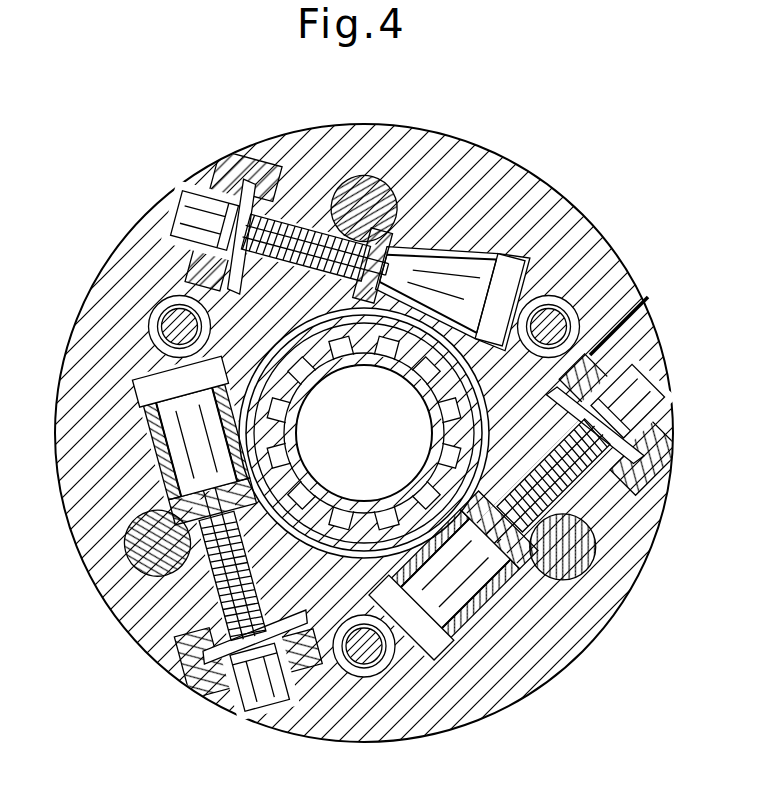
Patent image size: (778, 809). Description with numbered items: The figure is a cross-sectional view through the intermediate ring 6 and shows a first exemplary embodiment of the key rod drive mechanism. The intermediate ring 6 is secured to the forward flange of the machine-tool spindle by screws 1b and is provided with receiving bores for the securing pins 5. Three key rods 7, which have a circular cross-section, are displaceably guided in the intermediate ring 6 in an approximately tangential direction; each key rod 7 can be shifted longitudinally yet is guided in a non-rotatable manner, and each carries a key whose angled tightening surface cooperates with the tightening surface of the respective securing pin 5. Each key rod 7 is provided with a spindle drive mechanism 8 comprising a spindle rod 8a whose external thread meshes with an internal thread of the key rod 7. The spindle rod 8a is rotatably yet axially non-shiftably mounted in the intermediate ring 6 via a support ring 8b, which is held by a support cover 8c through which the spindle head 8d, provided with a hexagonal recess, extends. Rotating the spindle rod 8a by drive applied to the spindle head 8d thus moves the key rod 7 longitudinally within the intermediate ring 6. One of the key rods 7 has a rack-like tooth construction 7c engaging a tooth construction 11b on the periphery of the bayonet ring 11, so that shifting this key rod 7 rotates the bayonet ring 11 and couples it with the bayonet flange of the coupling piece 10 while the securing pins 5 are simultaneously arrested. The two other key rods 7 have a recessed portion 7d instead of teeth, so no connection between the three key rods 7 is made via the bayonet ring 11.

The screws 1b is at (550, 297).
The securing pin 5 is at (353, 185).
The intermediate ring 6 is at (480, 160).
The key rod 7 is at (422, 243).
The rack-like tooth construction 7c is at (477, 313).
The recessed portion 7d is at (185, 580).
The spindle drive mechanism 8 is at (262, 190).
The spindle rod 8a is at (310, 215).
The support ring 8b is at (240, 290).
The support cover 8c is at (232, 160).
The spindle head 8d is at (195, 197).
The coupling piece 10 is at (364, 433).
The bayonet ring 11 is at (247, 388).
The tooth construction 11b is at (300, 335).